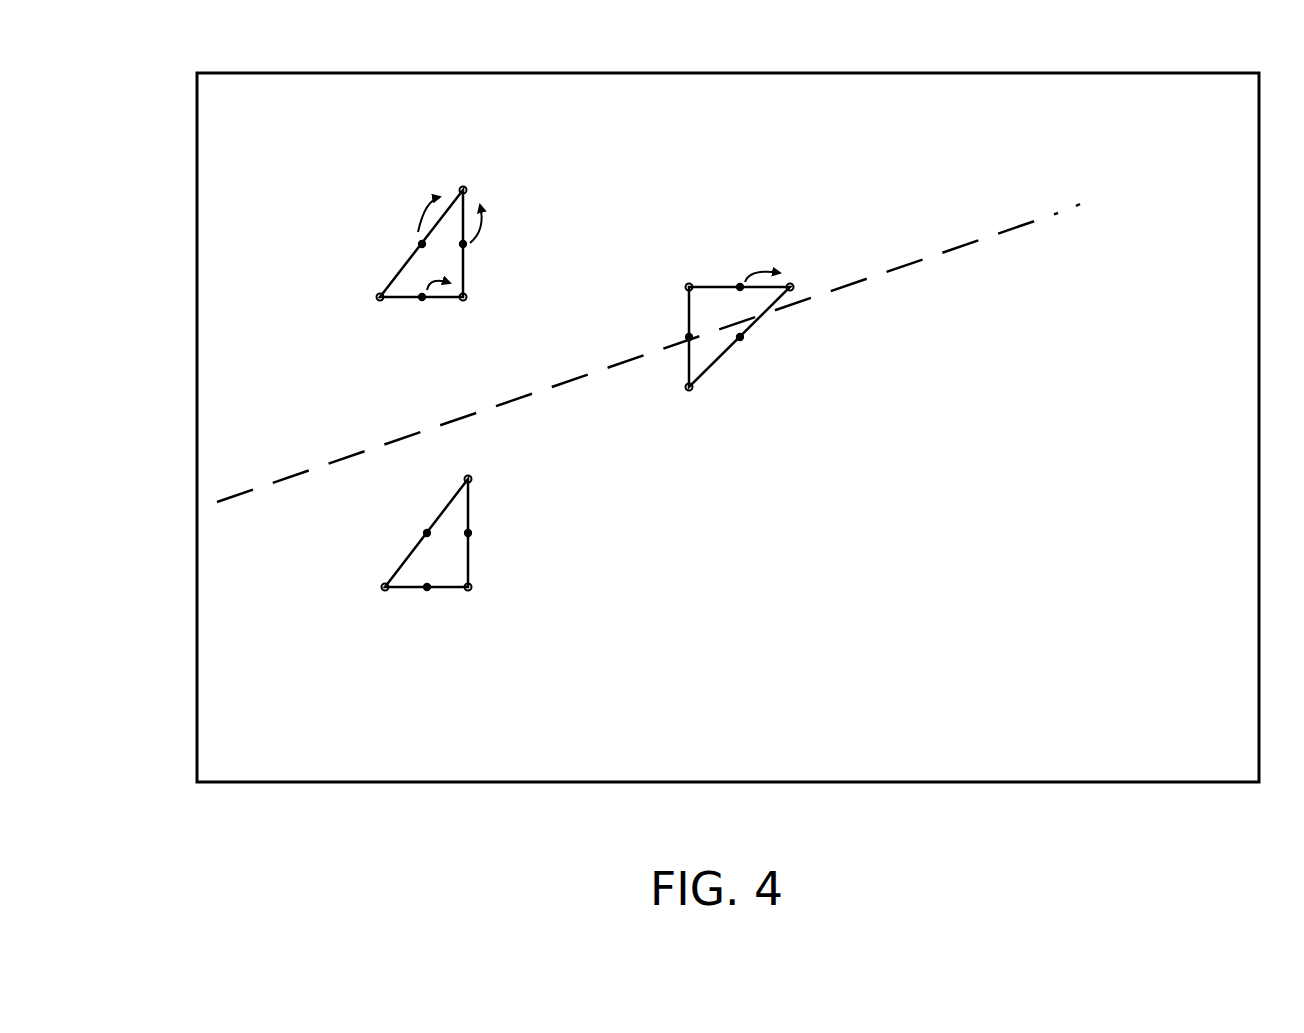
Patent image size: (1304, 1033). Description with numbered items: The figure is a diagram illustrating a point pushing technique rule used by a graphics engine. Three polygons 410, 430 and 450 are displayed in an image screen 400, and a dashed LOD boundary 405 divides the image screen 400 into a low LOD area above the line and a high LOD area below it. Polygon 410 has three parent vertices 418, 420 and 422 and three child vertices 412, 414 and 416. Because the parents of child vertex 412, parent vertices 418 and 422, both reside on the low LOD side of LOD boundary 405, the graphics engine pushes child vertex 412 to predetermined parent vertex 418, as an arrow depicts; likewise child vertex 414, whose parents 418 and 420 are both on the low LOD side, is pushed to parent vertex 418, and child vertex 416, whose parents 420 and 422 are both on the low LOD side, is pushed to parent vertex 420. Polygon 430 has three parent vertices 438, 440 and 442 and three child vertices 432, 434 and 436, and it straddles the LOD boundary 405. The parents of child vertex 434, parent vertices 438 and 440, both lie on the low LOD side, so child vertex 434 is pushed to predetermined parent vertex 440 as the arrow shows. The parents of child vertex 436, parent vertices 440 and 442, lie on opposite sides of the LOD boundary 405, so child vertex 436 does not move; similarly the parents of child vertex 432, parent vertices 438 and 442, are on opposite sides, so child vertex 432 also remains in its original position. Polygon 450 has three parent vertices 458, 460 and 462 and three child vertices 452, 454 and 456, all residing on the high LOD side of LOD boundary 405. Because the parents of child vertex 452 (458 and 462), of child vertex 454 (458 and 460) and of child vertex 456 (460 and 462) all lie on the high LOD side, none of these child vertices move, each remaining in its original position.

The image screen 400 is at (910, 73).
The LOD boundary 405 is at (1063, 212).
The polygon 410 is at (397, 278).
The child vertex 412 is at (420, 242).
The child vertex 414 is at (466, 244).
The child vertex 416 is at (422, 300).
The parent vertex 418 is at (466, 187).
The parent vertex 420 is at (467, 297).
The parent vertex 422 is at (378, 300).
The polygon 430 is at (712, 368).
The child vertex 432 is at (687, 337).
The child vertex 434 is at (740, 285).
The child vertex 436 is at (742, 340).
The parent vertex 438 is at (687, 287).
The parent vertex 440 is at (793, 287).
The parent vertex 442 is at (687, 390).
The polygon 450 is at (398, 590).
The child vertex 452 is at (426, 531).
The child vertex 454 is at (471, 533).
The child vertex 456 is at (428, 590).
The parent vertex 458 is at (470, 477).
The parent vertex 460 is at (471, 587).
The parent vertex 462 is at (384, 585).